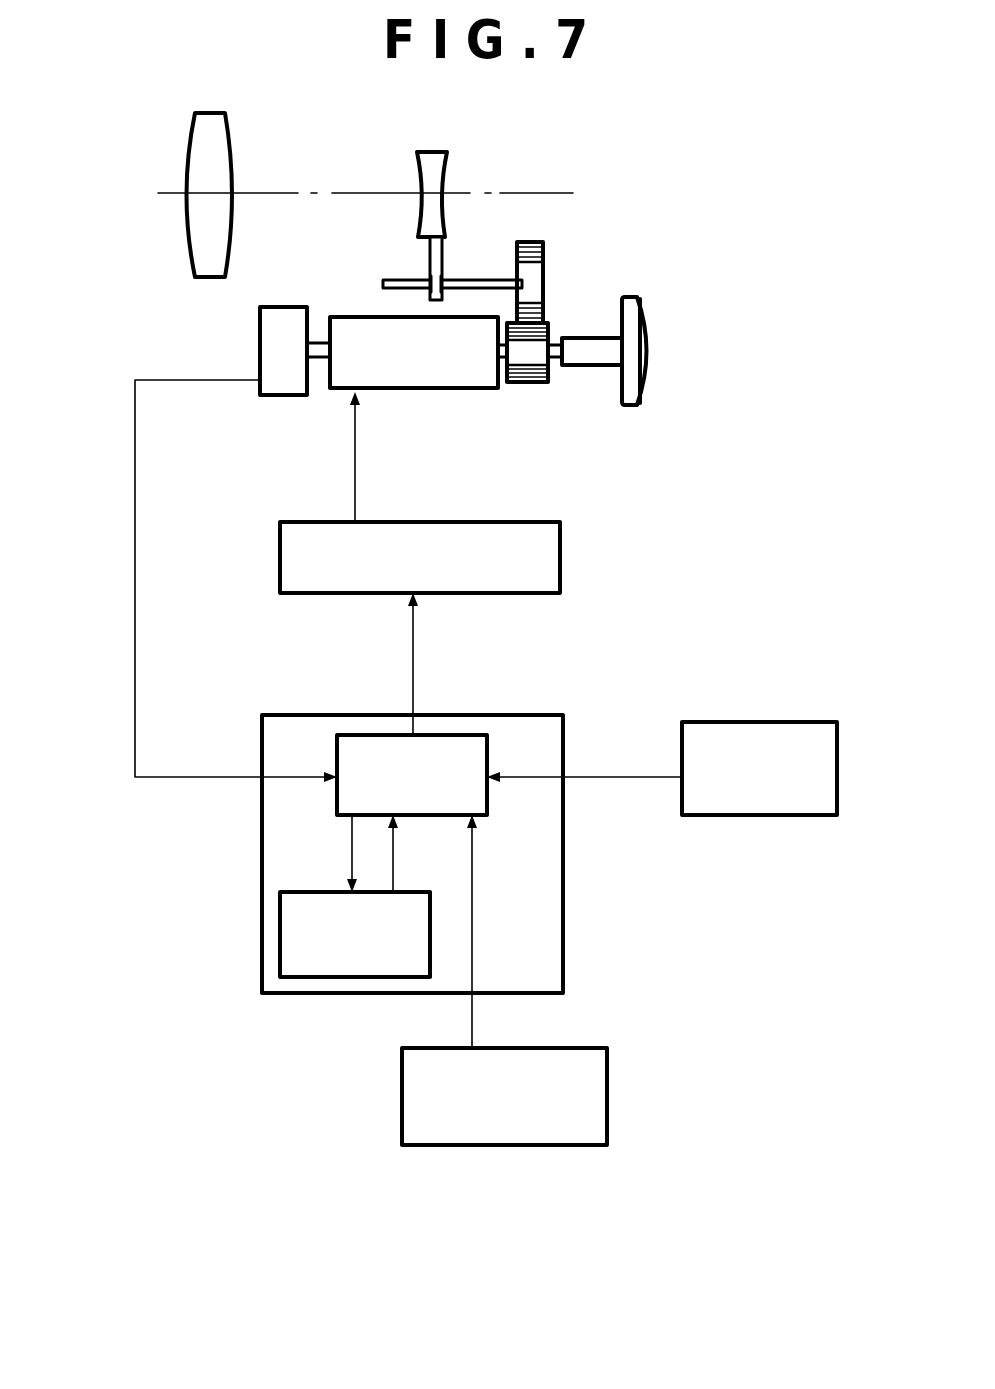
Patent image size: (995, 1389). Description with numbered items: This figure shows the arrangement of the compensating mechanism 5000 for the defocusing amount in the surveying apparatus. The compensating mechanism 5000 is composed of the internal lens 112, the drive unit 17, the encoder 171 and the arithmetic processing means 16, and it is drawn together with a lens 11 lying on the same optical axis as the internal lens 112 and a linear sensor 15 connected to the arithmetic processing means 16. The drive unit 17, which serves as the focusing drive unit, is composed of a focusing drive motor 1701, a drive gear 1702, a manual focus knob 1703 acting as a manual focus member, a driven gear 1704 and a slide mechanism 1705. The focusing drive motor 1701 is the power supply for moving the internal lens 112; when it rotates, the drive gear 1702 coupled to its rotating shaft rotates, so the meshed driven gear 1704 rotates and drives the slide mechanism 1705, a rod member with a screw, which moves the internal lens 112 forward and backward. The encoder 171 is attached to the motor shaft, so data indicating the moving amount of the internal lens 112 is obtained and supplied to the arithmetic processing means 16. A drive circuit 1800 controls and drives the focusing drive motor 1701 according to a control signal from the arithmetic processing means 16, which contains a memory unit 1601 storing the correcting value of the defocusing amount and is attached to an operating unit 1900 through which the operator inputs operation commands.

The objective lens 11 is at (228, 143).
The internal lens 112 is at (431, 152).
The slide mechanism 1705 is at (400, 261).
The driven gear 1704 is at (543, 262).
The manual focus knob 1703 is at (657, 338).
The encoder 171 is at (260, 322).
The focusing drive motor 1701 is at (440, 390).
The drive gear 1702 is at (542, 383).
The drive unit 17 is at (530, 470).
The drive circuit 1800 is at (560, 555).
The arithmetic processing means 16 is at (548, 913).
The memory unit 1601 is at (332, 977).
The linear sensor 15 is at (748, 722).
The operating unit 1900 is at (607, 1107).
The compensating mechanism 5000 is at (585, 1189).